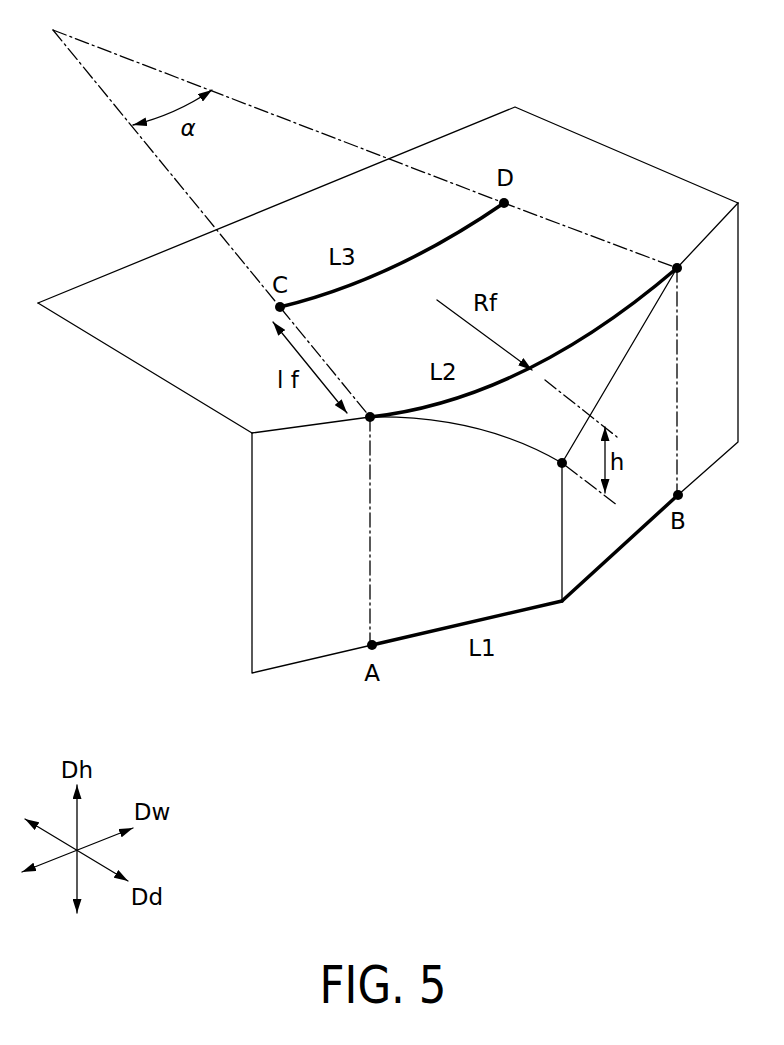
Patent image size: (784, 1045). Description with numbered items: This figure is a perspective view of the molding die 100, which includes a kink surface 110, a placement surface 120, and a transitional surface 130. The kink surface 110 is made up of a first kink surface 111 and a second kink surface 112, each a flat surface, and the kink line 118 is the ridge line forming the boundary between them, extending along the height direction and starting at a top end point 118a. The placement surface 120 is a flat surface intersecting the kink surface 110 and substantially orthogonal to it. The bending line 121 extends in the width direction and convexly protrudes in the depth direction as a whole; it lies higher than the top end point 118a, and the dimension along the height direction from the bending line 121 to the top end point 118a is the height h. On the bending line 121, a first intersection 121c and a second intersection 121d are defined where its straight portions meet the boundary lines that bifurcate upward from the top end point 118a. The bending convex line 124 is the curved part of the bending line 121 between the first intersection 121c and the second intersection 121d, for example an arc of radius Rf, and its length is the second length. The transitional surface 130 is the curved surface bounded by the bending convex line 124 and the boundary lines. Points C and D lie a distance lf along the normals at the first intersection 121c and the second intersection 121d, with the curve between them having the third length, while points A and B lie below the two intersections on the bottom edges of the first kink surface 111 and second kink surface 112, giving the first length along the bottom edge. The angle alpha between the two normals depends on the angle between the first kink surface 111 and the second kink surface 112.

The molding die 100 is at (403, 128).
The placement surface 120 is at (463, 150).
The bending convex line 124 is at (523, 328).
The bending line 121 is at (560, 352).
The second intersection 121d is at (677, 266).
The first intersection 121c is at (370, 415).
The transitional surface 130 is at (588, 382).
The top end point 118a is at (558, 465).
The kink line 118 is at (560, 535).
The second kink surface 112 is at (633, 525).
The first kink surface 111 is at (442, 610).
The kink surface 110 is at (537, 590).